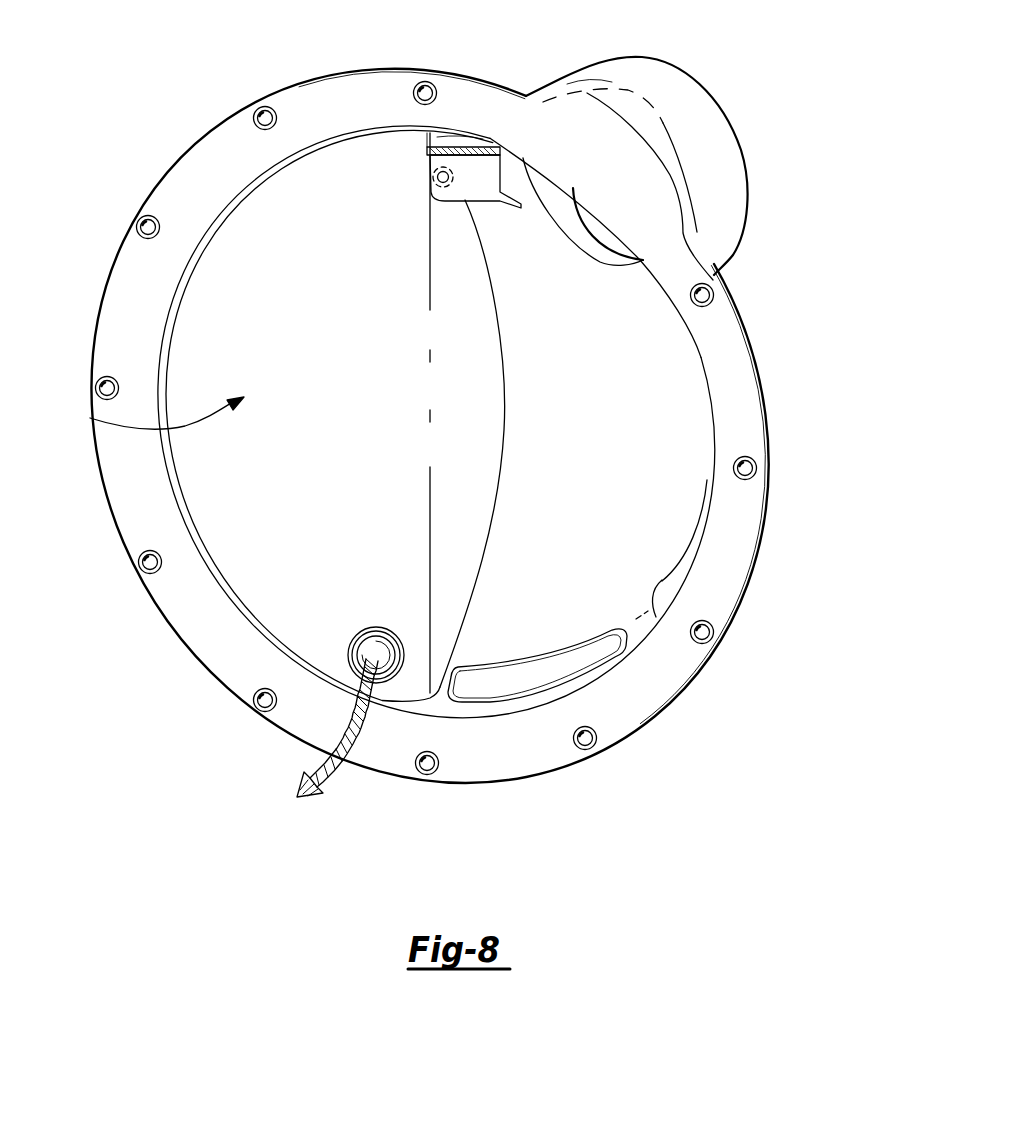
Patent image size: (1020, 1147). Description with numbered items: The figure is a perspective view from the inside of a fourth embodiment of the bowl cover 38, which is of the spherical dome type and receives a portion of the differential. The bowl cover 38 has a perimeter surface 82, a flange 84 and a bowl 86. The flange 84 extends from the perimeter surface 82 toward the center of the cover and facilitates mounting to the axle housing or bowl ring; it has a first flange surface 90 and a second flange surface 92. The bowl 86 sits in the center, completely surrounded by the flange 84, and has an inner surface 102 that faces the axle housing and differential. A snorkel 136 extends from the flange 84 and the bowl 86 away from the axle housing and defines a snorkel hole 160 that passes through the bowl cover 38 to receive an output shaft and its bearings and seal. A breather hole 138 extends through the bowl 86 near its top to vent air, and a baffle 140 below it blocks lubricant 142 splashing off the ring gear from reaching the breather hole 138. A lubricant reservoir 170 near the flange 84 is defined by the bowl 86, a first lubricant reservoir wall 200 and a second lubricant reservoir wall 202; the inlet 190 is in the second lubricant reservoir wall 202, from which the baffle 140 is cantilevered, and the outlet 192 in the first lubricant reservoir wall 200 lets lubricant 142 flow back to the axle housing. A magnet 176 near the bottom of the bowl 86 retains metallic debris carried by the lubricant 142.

The bowl cover 38 is at (471, 426).
The perimeter surface 82 is at (187, 150).
The flange 84 is at (738, 556).
The bowl 86 is at (728, 611).
The first flange surface 90 is at (762, 403).
The second flange surface 92 is at (745, 427).
The inner surface 102 is at (663, 580).
The snorkel 136 is at (703, 93).
The breather hole 138 is at (453, 141).
The baffle 140 is at (431, 147).
The lubricant 142 is at (330, 787).
The snorkel hole 160 is at (603, 228).
The lubricant reservoir 170 is at (145, 413).
The magnet 176 is at (545, 680).
The inlet 190 is at (418, 178).
The outlet 192 is at (360, 650).
The first lubricant reservoir wall 200 is at (240, 502).
The second lubricant reservoir wall 202 is at (470, 396).